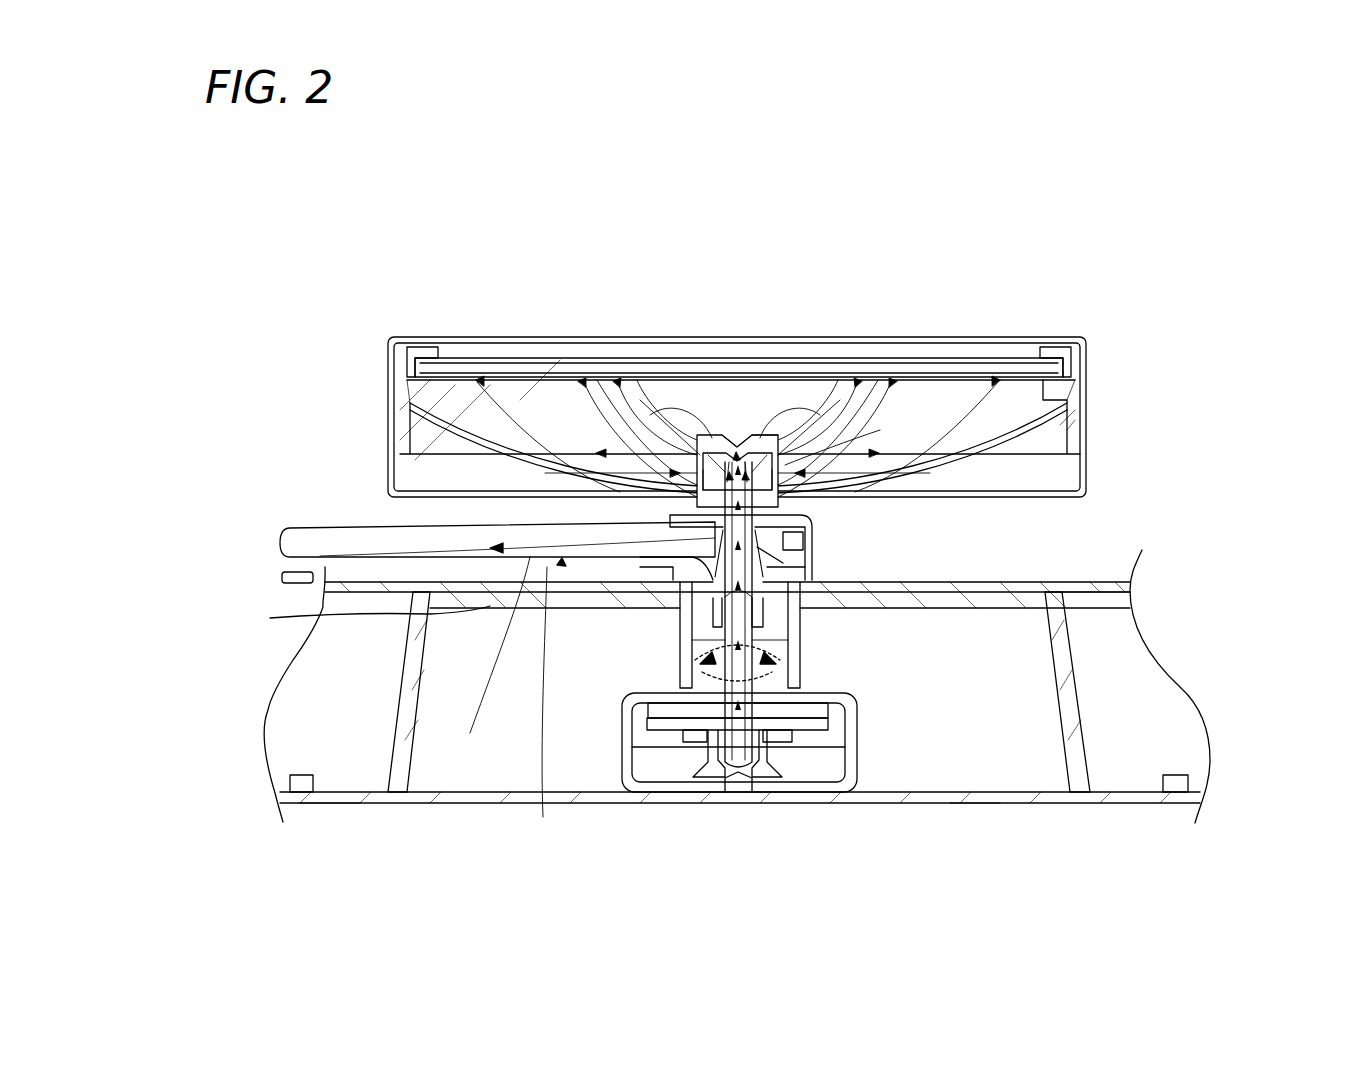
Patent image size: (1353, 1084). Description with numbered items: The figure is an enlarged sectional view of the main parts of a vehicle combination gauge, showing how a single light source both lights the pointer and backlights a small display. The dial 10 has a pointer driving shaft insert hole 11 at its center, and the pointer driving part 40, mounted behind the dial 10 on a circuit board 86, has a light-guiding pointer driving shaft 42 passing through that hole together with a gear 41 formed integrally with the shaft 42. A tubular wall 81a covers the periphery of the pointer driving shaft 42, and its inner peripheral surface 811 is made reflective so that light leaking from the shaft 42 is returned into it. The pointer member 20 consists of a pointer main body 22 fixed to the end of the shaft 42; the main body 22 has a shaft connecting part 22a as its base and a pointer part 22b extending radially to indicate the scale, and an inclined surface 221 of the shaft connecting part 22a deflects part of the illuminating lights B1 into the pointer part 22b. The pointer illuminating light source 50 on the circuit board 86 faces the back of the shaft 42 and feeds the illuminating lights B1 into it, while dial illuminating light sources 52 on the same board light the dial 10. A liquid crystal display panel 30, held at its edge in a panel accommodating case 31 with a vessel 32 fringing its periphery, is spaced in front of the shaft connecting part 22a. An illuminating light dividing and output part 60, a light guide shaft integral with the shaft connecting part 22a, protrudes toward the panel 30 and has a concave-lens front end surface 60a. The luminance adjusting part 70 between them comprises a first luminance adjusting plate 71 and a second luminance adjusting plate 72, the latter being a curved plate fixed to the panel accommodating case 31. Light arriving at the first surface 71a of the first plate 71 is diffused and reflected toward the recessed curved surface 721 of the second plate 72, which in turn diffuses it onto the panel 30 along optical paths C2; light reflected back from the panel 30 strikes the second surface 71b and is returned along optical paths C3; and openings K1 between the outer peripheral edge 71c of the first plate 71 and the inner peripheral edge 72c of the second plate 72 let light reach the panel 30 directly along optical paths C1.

The dial 10 is at (1105, 582).
The pointer driving shaft insert hole 11 is at (812, 645).
The pointer member 20 is at (547, 567).
The pointer main body 22 is at (530, 557).
The shaft connecting part 22a is at (880, 612).
The pointer part 22b is at (360, 540).
The inclined surface 221 is at (1000, 582).
The liquid crystal display panel 30 is at (470, 345).
The panel accommodating case 31 is at (395, 420).
The vessel 32 is at (418, 338).
The pointer driving part 40 is at (622, 760).
The gear 41 is at (636, 782).
The pointer driving shaft 42 is at (665, 732).
The pointer illuminating light source 50 is at (760, 792).
The dial illuminating light sources 52 is at (300, 775).
The illuminating light dividing and output part 60 is at (668, 520).
The front end surface 60a is at (802, 640).
The luminance adjusting part 70 is at (568, 238).
The first luminance adjusting plate 71 is at (703, 453).
The first surface 71a is at (790, 500).
The second surface 71b is at (724, 437).
The outer peripheral edge 71c is at (760, 437).
The second luminance adjusting plate 72 is at (577, 497).
The inner peripheral edge 72c is at (780, 507).
The recessed curved surface 721 is at (780, 480).
The inner peripheral surface 811 is at (778, 705).
The tubular wall 81a is at (812, 600).
The circuit board 86 is at (345, 803).
The illuminating lights B1 is at (330, 614).
The optical paths C1 is at (650, 415).
The optical paths C2 is at (880, 430).
The optical paths C3 is at (745, 447).
The openings for direct illumination K1 is at (640, 400).